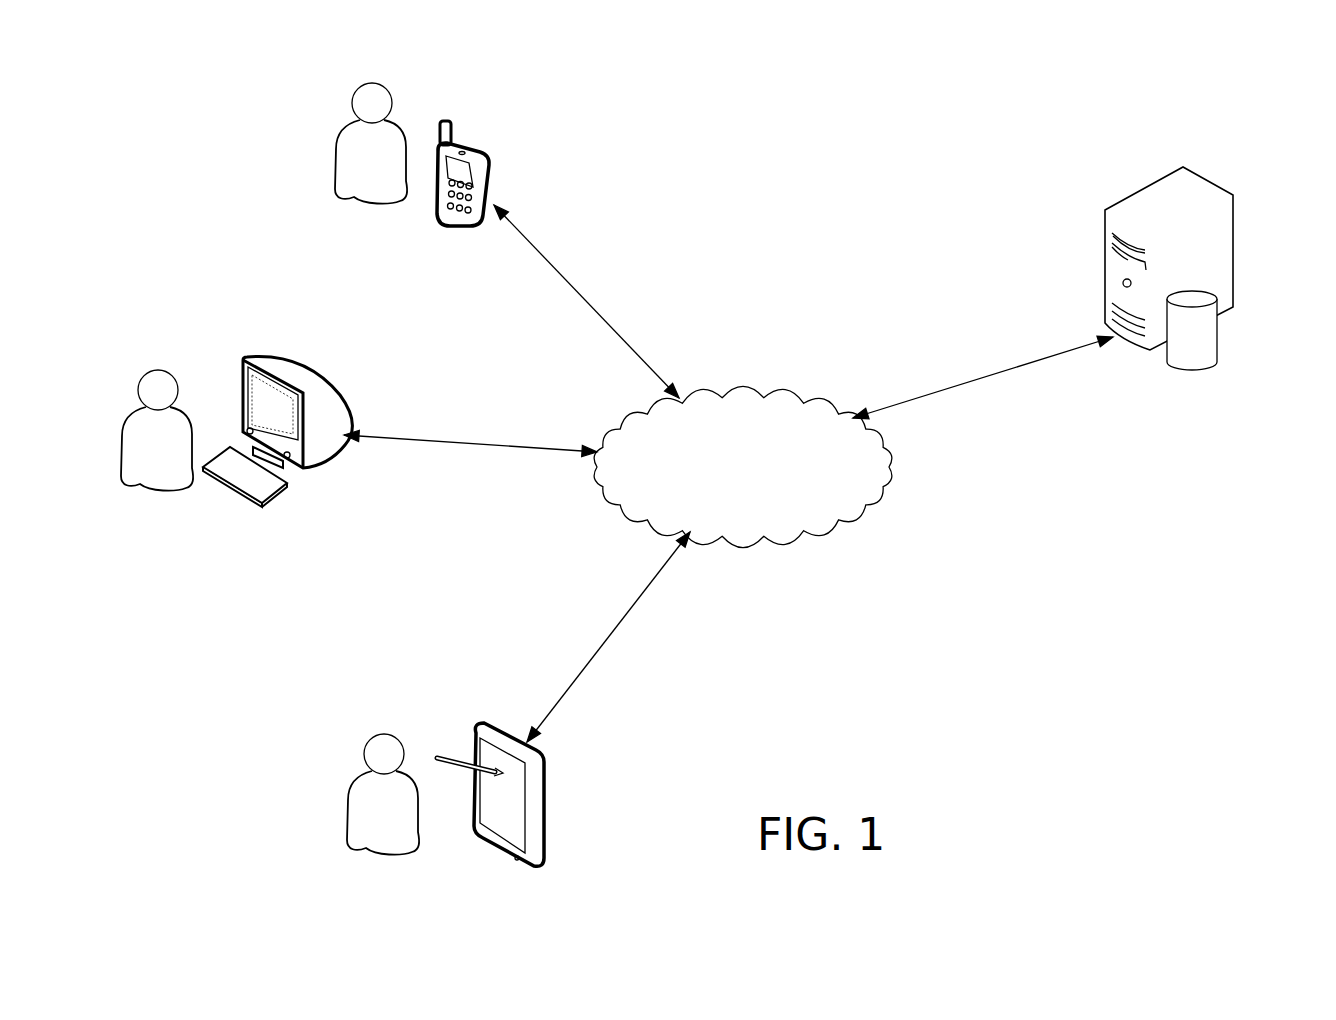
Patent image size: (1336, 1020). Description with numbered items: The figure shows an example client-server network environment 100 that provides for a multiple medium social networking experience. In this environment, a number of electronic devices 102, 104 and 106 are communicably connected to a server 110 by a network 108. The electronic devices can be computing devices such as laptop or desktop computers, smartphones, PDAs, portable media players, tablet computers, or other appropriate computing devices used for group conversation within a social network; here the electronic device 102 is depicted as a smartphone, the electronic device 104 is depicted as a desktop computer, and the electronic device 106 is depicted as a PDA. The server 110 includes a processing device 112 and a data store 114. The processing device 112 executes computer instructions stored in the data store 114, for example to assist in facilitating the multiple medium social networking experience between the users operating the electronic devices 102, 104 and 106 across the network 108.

The network environment 100 is at (862, 132).
The electronic device 102 is at (477, 140).
The electronic device 104 is at (313, 372).
The electronic device 106 is at (482, 720).
The network 108 is at (745, 392).
The server 110 is at (1179, 262).
The processing device 112 is at (1205, 177).
The data store 114 is at (1219, 350).